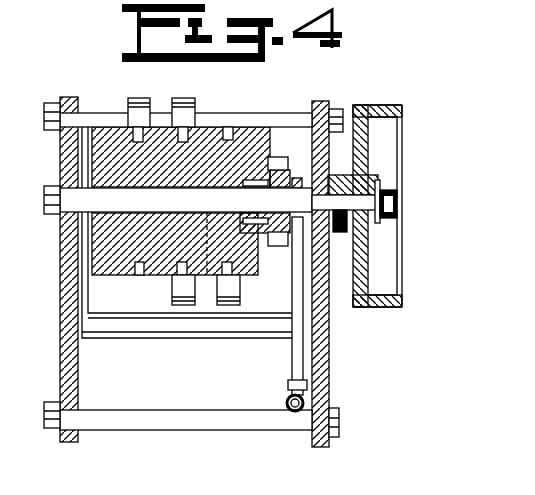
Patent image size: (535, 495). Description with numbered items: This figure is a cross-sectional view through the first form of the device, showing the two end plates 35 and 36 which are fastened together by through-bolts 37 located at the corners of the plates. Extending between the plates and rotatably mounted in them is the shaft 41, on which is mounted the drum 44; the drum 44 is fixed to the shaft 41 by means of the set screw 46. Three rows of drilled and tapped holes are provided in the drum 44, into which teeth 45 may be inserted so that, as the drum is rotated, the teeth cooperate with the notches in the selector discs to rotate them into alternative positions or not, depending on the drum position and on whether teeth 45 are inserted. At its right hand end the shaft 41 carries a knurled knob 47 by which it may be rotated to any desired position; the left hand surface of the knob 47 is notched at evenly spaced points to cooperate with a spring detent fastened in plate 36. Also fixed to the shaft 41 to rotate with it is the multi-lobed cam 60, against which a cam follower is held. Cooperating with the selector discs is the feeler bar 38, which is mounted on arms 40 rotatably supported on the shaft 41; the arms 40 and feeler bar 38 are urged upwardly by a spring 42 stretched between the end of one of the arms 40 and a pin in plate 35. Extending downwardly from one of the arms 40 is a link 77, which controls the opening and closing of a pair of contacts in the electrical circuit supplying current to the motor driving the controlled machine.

The end plate 35 is at (64, 333).
The end plate 36 is at (329, 372).
The through-bolts 37 is at (300, 118).
The feeler bar 38 is at (162, 338).
The arms 40 is at (86, 292).
The shaft 41 is at (112, 205).
The spring 42 is at (306, 403).
The drum 44 is at (113, 128).
The teeth 45 is at (186, 99).
The set screw 46 is at (207, 275).
The knurled knob 47 is at (396, 138).
The multi-lobed cam 60 is at (277, 157).
The link 77 is at (288, 386).